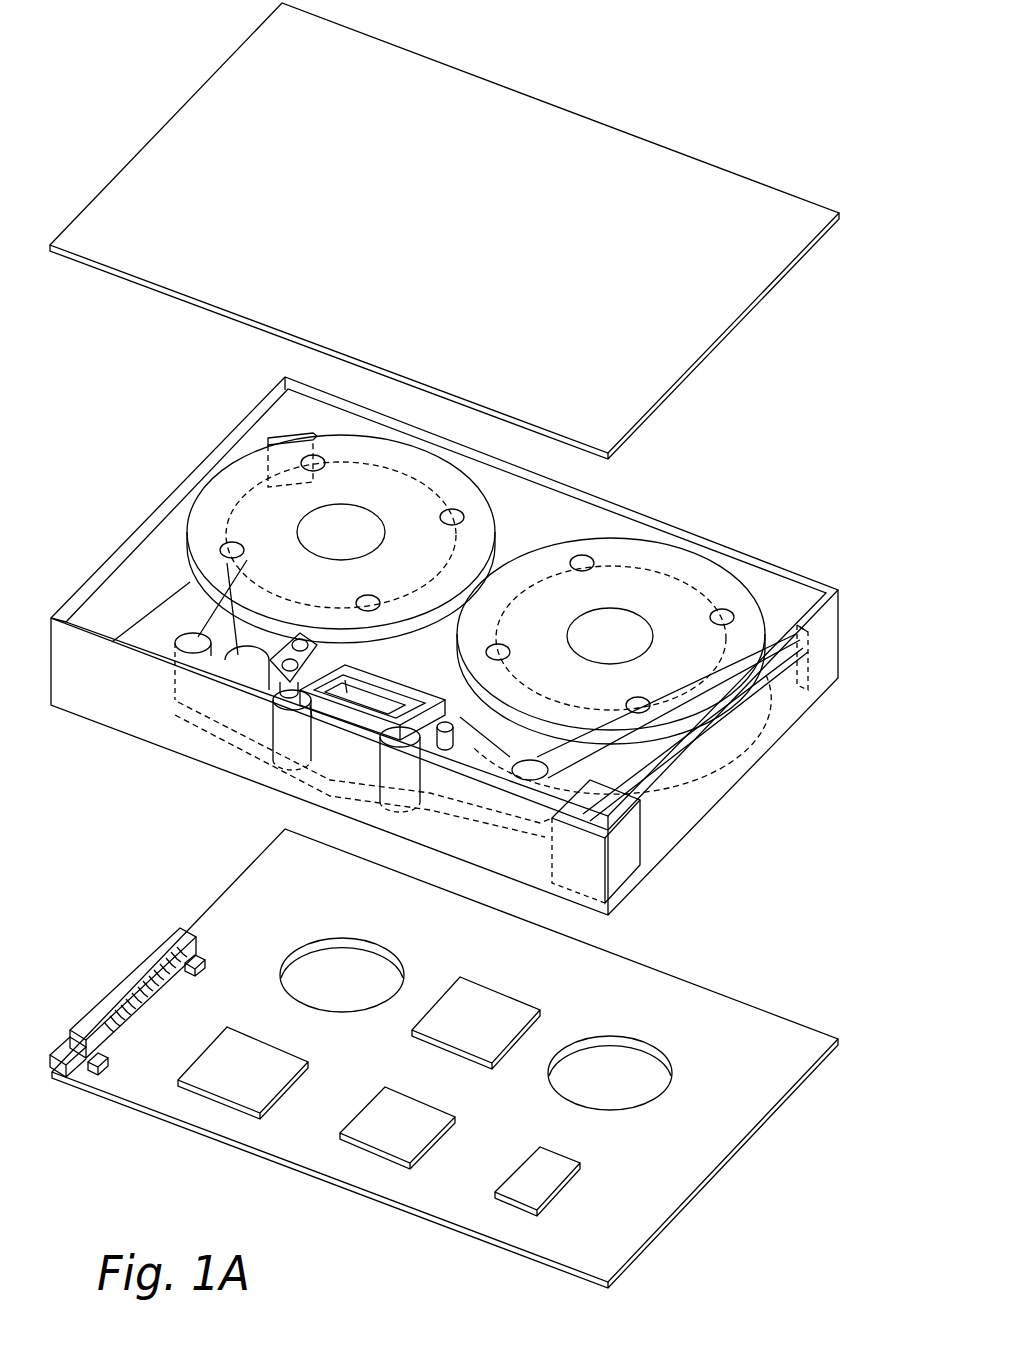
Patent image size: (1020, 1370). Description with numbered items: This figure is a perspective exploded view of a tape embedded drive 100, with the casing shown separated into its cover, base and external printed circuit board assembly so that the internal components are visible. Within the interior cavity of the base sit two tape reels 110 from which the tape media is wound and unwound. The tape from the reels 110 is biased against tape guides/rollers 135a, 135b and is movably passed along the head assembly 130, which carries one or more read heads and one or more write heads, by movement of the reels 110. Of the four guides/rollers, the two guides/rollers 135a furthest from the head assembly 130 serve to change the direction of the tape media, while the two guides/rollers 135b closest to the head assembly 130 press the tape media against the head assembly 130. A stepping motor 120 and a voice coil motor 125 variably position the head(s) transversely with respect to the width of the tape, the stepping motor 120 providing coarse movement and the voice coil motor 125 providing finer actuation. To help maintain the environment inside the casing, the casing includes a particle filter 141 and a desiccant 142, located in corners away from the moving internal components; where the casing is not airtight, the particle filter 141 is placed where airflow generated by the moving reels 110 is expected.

The tape embedded drive 100 is at (145, 27).
The tape reel 110 is at (617, 548).
The stepping motor 120 is at (255, 660).
The voice coil motor 125 is at (349, 735).
The head assembly 130 is at (373, 700).
The tape guides/rollers 135a is at (190, 640).
The tape guides/rollers 135b is at (287, 737).
The particle filter 141 is at (810, 662).
The desiccant 142 is at (627, 845).